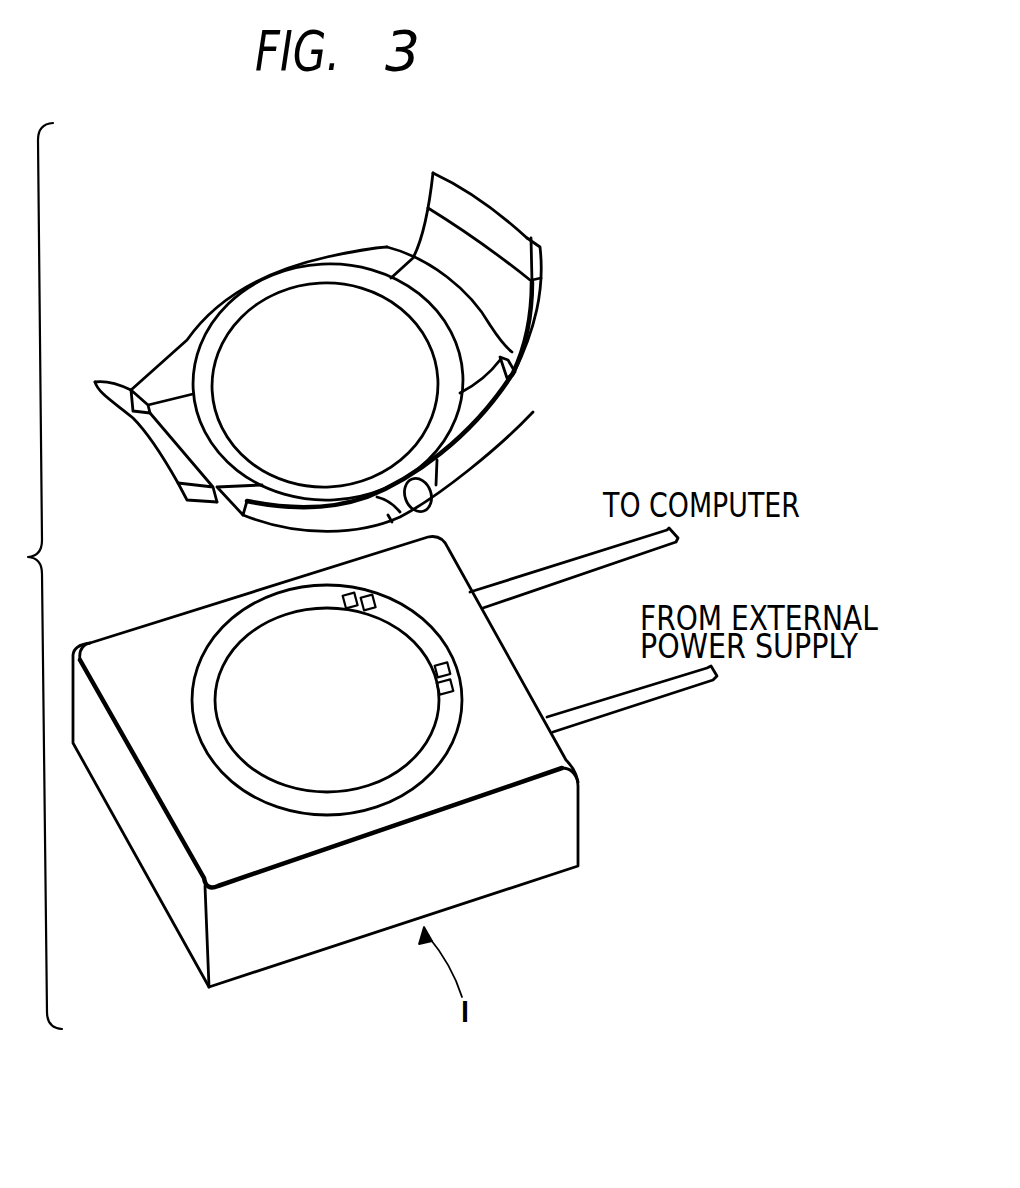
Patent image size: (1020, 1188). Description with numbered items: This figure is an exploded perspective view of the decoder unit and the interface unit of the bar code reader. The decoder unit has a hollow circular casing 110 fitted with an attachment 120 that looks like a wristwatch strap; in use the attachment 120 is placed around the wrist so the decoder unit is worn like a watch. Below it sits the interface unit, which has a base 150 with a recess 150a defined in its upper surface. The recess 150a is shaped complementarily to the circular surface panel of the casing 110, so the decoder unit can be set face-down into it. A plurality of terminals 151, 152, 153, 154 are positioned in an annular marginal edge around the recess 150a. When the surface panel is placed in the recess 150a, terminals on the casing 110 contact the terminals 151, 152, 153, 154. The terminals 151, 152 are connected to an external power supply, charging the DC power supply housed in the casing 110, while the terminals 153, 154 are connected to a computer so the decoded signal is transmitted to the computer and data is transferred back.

The casing 110 is at (250, 296).
The attachment 120 is at (538, 297).
The base 150 is at (177, 904).
The recess 150a is at (390, 768).
The terminal 151 is at (460, 692).
The terminal 152 is at (452, 668).
The terminal 153 is at (378, 596).
The terminal 154 is at (347, 593).